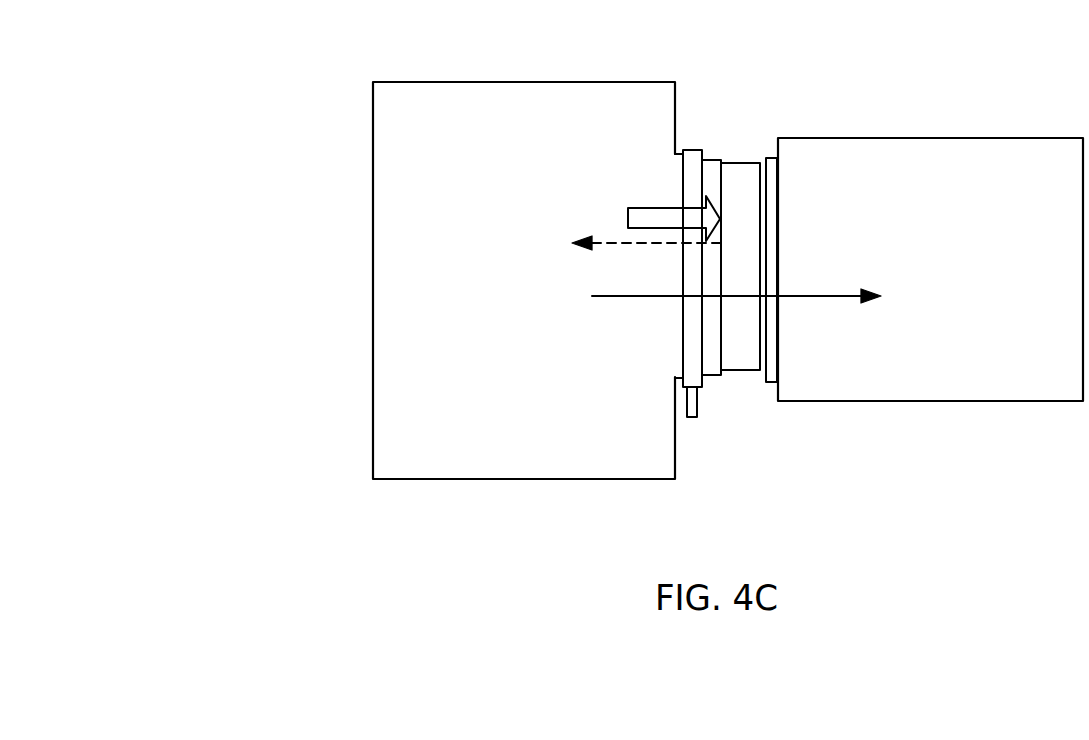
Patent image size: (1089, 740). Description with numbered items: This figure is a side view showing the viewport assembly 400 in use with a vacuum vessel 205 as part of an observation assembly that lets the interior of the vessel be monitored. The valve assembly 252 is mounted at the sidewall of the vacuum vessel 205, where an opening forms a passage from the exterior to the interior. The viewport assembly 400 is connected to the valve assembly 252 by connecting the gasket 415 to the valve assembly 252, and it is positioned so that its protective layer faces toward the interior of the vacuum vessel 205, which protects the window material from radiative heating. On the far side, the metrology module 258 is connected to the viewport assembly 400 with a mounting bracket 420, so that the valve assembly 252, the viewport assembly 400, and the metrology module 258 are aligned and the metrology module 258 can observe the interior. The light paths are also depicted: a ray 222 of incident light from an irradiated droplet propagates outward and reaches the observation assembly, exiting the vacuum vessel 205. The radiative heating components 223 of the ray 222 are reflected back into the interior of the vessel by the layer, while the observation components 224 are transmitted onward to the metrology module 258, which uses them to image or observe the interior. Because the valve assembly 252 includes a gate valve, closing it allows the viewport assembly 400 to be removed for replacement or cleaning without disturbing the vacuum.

The vacuum vessel 205 is at (290, 258).
The ray of incident light 222 is at (640, 207).
The radiative heating components 223 is at (650, 245).
The observation components 224 is at (640, 300).
The valve assembly 252 is at (697, 148).
The metrology module 258 is at (903, 168).
The viewport assembly 400 is at (747, 195).
The gasket 415 is at (715, 167).
The mounting bracket 420 is at (774, 162).